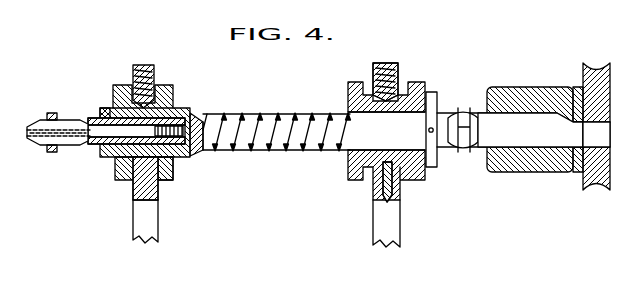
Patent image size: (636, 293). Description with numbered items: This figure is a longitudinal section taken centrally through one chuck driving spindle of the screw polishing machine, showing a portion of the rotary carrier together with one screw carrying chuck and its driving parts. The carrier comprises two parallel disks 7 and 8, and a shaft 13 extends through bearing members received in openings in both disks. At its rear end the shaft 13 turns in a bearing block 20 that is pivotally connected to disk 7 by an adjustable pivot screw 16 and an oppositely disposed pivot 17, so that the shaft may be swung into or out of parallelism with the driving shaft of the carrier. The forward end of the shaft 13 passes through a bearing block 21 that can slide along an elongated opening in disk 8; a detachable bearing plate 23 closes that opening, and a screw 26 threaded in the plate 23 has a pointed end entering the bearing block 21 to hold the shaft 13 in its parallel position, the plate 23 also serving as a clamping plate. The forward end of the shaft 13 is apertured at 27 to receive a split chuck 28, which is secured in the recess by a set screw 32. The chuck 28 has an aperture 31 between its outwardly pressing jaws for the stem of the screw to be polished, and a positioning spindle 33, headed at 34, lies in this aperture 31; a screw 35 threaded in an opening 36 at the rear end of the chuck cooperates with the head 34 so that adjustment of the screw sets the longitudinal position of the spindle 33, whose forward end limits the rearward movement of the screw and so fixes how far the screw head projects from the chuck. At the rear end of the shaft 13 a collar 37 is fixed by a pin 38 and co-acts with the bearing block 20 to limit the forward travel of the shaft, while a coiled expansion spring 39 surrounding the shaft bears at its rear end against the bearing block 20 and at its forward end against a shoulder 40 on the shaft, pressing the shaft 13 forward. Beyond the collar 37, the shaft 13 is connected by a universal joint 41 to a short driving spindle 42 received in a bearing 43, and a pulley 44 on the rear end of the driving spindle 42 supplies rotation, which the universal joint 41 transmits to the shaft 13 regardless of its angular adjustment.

The disk 7 is at (399, 231).
The disk 8 is at (138, 224).
The shaft 13 is at (254, 113).
The adjustable pivot screw 16 is at (386, 64).
The pivot 17 is at (381, 180).
The bearing block 20 is at (408, 95).
The bearing block 21 is at (118, 172).
The bearing plate 23 is at (156, 88).
The screw 26 is at (145, 66).
The aperture 27 is at (186, 160).
The chuck 28 is at (100, 148).
The aperture 31 is at (32, 139).
The set screw 32 is at (104, 108).
The positioning spindle 33 is at (66, 131).
The head 34 is at (172, 103).
The screw 35 is at (168, 172).
The opening 36 is at (197, 114).
The collar 37 is at (430, 168).
The pin 38 is at (428, 130).
The coiled expansion spring 39 is at (249, 152).
The shoulder 40 is at (194, 158).
The universal joint 41 is at (463, 151).
The driving spindle 42 is at (523, 130).
The bearing 43 is at (543, 170).
The pulley 44 is at (592, 189).